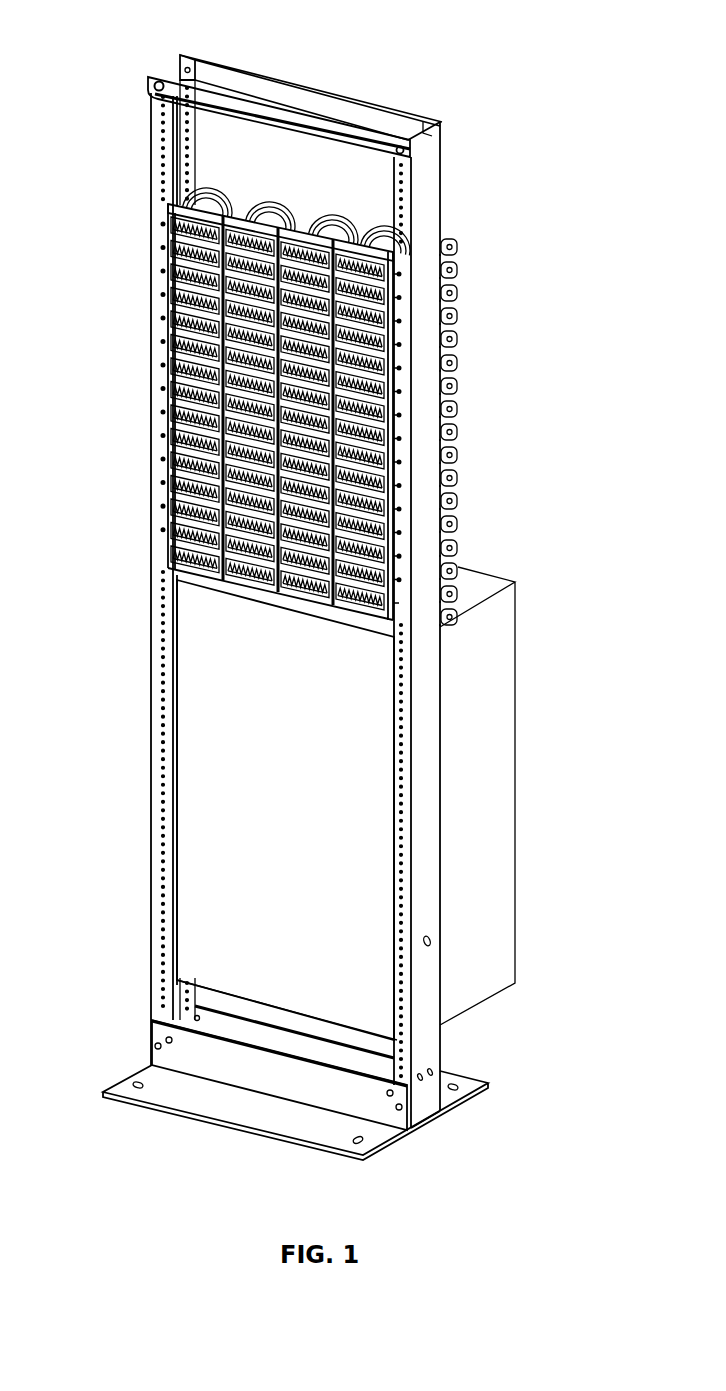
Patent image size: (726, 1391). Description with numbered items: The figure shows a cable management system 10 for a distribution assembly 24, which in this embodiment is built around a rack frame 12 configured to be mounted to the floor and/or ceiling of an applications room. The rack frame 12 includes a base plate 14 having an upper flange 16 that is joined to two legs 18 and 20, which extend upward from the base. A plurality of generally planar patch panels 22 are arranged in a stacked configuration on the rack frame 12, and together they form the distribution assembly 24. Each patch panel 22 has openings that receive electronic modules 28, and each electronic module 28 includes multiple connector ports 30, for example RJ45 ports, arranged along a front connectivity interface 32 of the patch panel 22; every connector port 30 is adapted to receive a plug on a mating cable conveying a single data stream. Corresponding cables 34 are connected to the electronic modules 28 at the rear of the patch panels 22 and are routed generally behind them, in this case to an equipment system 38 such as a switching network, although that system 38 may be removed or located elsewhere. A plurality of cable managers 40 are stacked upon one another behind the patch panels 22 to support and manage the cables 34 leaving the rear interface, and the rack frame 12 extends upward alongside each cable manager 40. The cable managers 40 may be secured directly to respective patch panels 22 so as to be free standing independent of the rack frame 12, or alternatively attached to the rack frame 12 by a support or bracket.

The cable management system 10 is at (93, 40).
The rack frame 12 is at (406, 96).
The base plate 14 is at (197, 1102).
The upper flange 16 is at (157, 1032).
The leg 18 is at (153, 960).
The leg 20 is at (433, 1010).
The patch panel 22 is at (163, 535).
The distribution assembly 24 is at (140, 366).
The electronic module 28 is at (163, 228).
The connector port 30 is at (163, 248).
The front connectivity interface 32 is at (163, 297).
The cable 34 is at (257, 190).
The equipment system 38 is at (185, 875).
The cable manager 40 is at (371, 210).